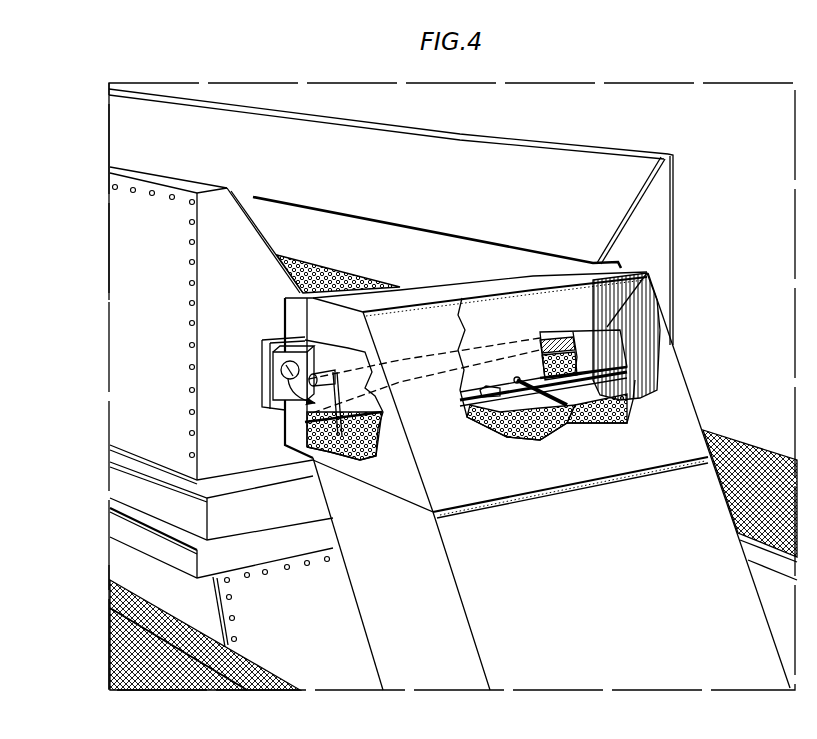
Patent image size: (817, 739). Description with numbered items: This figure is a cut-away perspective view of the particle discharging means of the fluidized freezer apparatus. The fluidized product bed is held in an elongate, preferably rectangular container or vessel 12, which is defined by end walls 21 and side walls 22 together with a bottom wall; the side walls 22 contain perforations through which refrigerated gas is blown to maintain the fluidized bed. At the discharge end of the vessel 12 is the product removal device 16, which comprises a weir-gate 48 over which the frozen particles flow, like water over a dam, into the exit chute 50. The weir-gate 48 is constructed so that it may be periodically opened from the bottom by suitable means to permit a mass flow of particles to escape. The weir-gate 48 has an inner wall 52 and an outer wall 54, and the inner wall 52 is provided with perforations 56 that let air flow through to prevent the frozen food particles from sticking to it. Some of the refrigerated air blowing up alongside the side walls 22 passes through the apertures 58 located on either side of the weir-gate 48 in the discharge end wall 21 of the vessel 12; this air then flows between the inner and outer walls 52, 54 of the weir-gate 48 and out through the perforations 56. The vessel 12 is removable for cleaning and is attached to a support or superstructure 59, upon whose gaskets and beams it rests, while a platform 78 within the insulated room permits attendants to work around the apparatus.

The container or vessel 12 is at (652, 141).
The product removal device 16 is at (279, 429).
The end wall 21 is at (230, 233).
The side wall 22 is at (273, 253).
The weir-gate 48 is at (490, 370).
The exit chute 50 is at (683, 409).
The inner wall 52 is at (312, 413).
The outer wall 54 is at (378, 394).
The perforations 56 is at (573, 361).
The apertures 58 is at (283, 371).
The support or superstructure 59 is at (210, 594).
The platform 78 is at (117, 631).